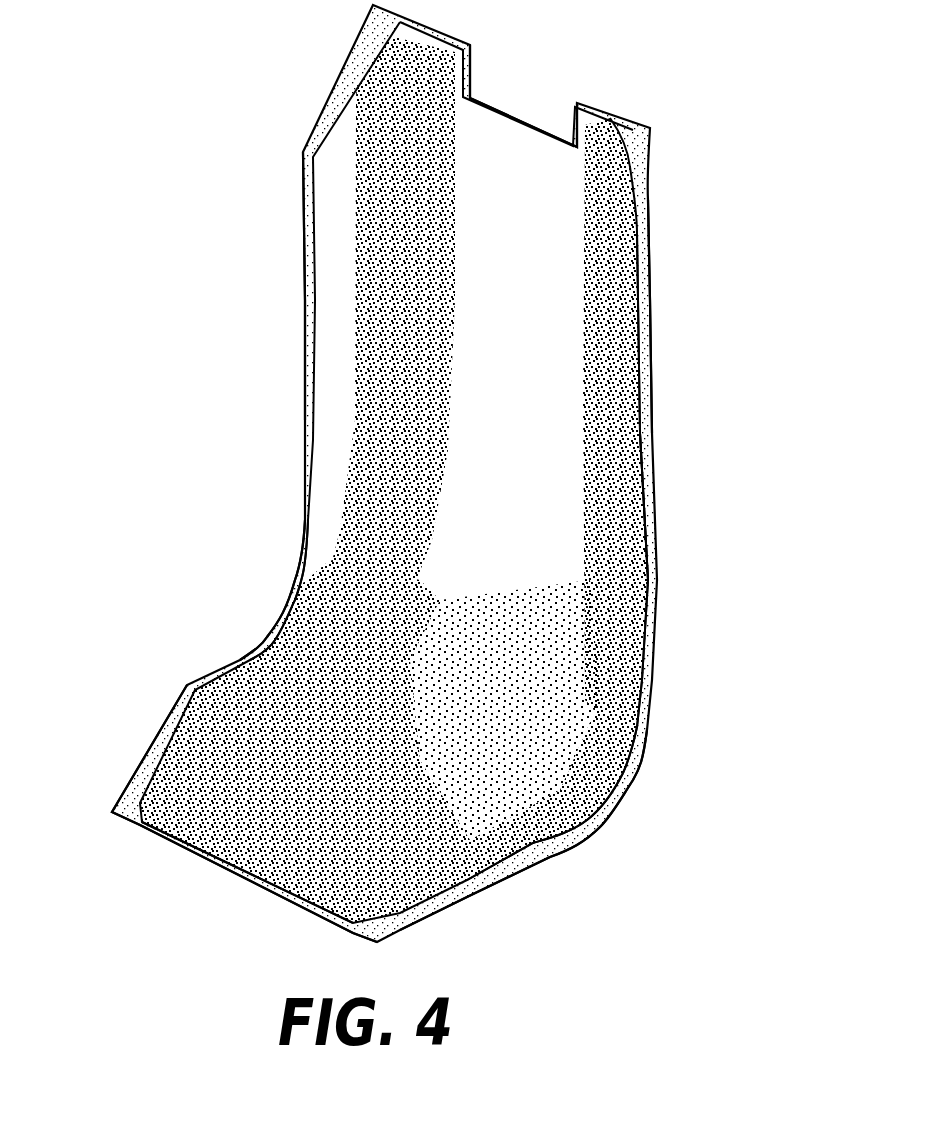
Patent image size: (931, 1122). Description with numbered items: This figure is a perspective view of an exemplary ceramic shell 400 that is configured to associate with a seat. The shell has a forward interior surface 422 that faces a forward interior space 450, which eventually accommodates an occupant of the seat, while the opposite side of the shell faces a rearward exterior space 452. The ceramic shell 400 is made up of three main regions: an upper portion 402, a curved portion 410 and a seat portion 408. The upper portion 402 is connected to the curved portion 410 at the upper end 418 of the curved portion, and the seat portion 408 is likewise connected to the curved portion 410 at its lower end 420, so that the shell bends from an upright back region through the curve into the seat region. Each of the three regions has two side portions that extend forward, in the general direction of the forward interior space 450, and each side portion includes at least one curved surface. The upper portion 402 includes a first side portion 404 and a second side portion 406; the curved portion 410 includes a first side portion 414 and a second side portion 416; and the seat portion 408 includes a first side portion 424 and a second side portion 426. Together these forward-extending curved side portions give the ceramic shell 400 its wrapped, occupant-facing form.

The ceramic shell 400 is at (250, 593).
The upper portion 402 is at (505, 160).
The first side portion 404 is at (627, 373).
The second side portion 406 is at (343, 268).
The seat portion 408 is at (280, 842).
The curved portion 410 is at (558, 717).
The first side portion 414 is at (590, 760).
The second side portion 416 is at (267, 640).
The upper end 418 is at (318, 633).
The lower end 420 is at (478, 750).
The forward interior surface 422 is at (488, 658).
The first side portion 424 is at (523, 828).
The second side portion 426 is at (184, 753).
The forward interior space 450 is at (416, 572).
The rearward exterior space 452 is at (682, 279).